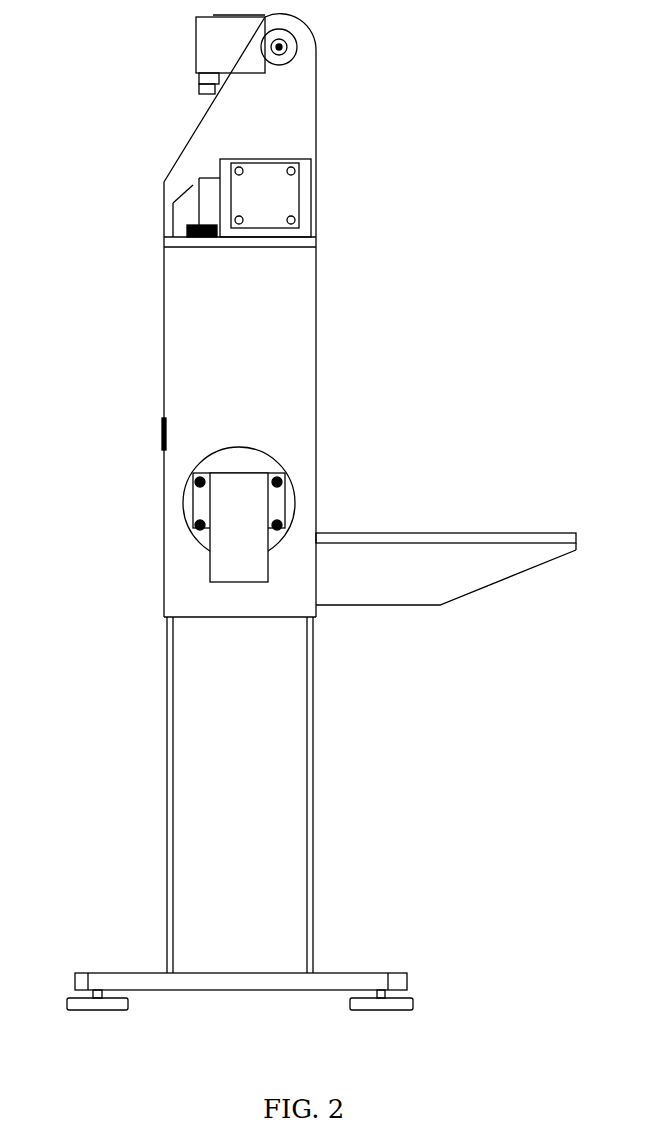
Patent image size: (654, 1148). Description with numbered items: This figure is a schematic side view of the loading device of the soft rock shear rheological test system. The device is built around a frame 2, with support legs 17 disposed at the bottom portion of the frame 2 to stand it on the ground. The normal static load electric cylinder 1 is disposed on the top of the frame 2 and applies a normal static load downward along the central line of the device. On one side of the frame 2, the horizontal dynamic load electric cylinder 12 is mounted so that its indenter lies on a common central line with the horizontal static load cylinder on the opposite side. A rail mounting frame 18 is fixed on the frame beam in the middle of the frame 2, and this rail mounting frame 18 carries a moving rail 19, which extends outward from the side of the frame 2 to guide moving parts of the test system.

The normal static load electric cylinder 1 is at (196, 45).
The frame 2 is at (163, 448).
The horizontal dynamic load electric cylinder 12 is at (232, 537).
The support legs 17 is at (67, 1003).
The rail mounting frame 18 is at (383, 530).
The moving rail 19 is at (493, 543).